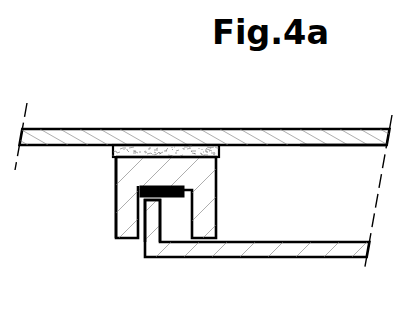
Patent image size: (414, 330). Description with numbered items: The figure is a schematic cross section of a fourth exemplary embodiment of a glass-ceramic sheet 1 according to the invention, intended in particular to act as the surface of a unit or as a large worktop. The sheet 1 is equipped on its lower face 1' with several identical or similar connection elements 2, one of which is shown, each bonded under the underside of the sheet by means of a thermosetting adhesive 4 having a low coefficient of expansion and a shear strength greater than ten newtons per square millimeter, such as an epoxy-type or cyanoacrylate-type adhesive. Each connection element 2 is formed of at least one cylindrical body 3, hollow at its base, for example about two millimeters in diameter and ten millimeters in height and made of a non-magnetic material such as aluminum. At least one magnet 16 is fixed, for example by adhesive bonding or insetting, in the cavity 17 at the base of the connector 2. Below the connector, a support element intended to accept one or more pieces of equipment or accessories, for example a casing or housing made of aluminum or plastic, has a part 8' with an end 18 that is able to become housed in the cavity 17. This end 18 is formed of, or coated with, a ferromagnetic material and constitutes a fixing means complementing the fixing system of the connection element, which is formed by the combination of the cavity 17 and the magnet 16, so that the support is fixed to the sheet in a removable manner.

The glass-ceramic sheet 1 is at (204, 96).
The lower face 1' is at (343, 182).
The connection element 2 is at (104, 180).
The cylindrical body 3 is at (208, 202).
The thermosetting adhesive 4 is at (145, 152).
The magnet 16 is at (179, 186).
The cavity 17 is at (178, 224).
The end 18 is at (152, 220).
The part 8' is at (254, 253).